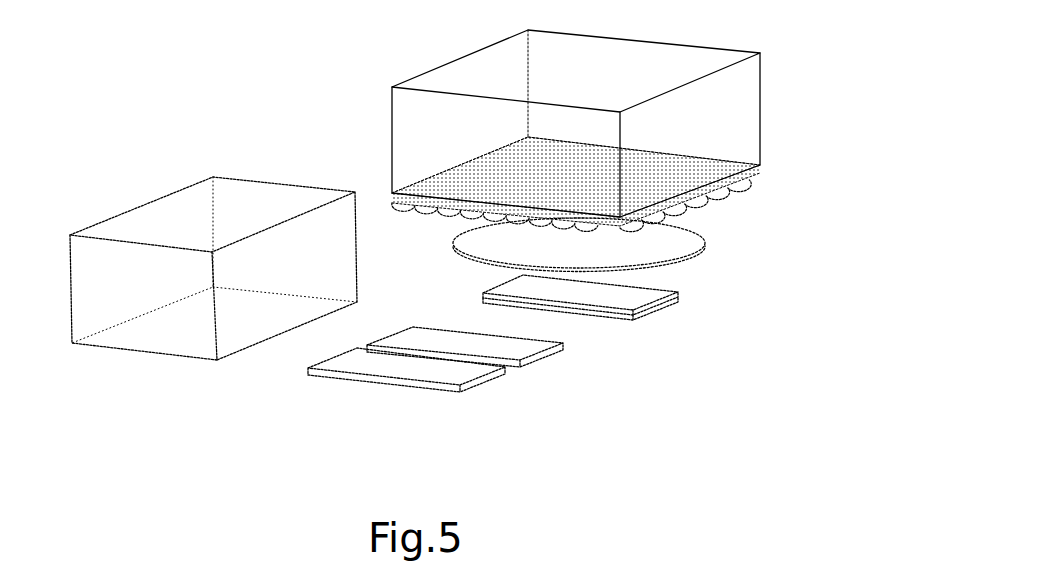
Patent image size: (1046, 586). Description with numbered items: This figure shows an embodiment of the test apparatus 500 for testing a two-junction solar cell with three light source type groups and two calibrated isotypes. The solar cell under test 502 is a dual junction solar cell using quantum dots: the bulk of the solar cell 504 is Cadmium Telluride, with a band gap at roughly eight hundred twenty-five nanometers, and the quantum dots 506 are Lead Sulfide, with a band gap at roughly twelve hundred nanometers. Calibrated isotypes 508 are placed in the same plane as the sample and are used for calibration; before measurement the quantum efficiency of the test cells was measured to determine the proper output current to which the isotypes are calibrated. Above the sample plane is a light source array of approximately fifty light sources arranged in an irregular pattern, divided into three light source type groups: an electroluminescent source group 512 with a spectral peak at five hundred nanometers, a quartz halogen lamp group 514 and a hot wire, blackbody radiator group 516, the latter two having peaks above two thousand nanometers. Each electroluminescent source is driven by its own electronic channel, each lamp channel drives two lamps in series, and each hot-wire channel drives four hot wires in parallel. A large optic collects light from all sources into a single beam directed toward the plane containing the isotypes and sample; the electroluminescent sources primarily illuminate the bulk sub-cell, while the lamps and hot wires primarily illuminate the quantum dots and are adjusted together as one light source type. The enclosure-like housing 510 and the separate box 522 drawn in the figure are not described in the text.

The test apparatus 500 is at (400, 70).
The solar cell under test 502 is at (650, 322).
The bulk of the solar cell 504 is at (682, 293).
The quantum dots 506 is at (682, 302).
The calibrated isotypes 508 is at (520, 385).
The housing 510 is at (680, 170).
The electroluminescent source group 512 is at (762, 183).
The quartz halogen lamp group 514 is at (740, 200).
The hot wire, blackbody radiator group 516 is at (700, 215).
The enclosure box 522 is at (188, 213).